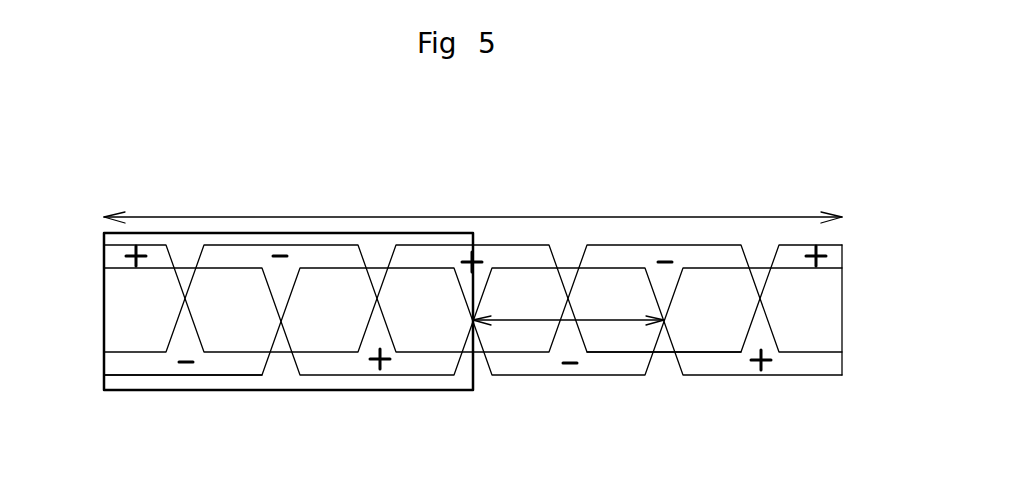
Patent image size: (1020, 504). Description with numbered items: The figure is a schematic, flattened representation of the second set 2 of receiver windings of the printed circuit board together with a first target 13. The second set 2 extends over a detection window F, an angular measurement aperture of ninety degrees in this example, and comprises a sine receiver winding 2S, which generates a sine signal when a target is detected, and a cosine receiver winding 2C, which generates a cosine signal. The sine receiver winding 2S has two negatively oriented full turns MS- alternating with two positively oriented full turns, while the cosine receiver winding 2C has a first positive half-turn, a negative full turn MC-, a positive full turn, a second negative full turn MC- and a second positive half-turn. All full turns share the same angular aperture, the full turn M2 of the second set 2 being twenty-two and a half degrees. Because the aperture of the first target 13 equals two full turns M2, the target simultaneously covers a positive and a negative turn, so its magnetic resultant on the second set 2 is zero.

The second set of receiver windings 2 is at (648, 172).
The first target 13 is at (186, 232).
The detection window F is at (281, 216).
The full turn of the second set M2 is at (567, 320).
The sine receiver winding 2S is at (198, 375).
The cosine receiver winding 2C is at (640, 352).
The negatively oriented full turn of the sine receiver winding MS- is at (244, 373).
The negative full turn of the cosine receiver winding MC- is at (303, 337).